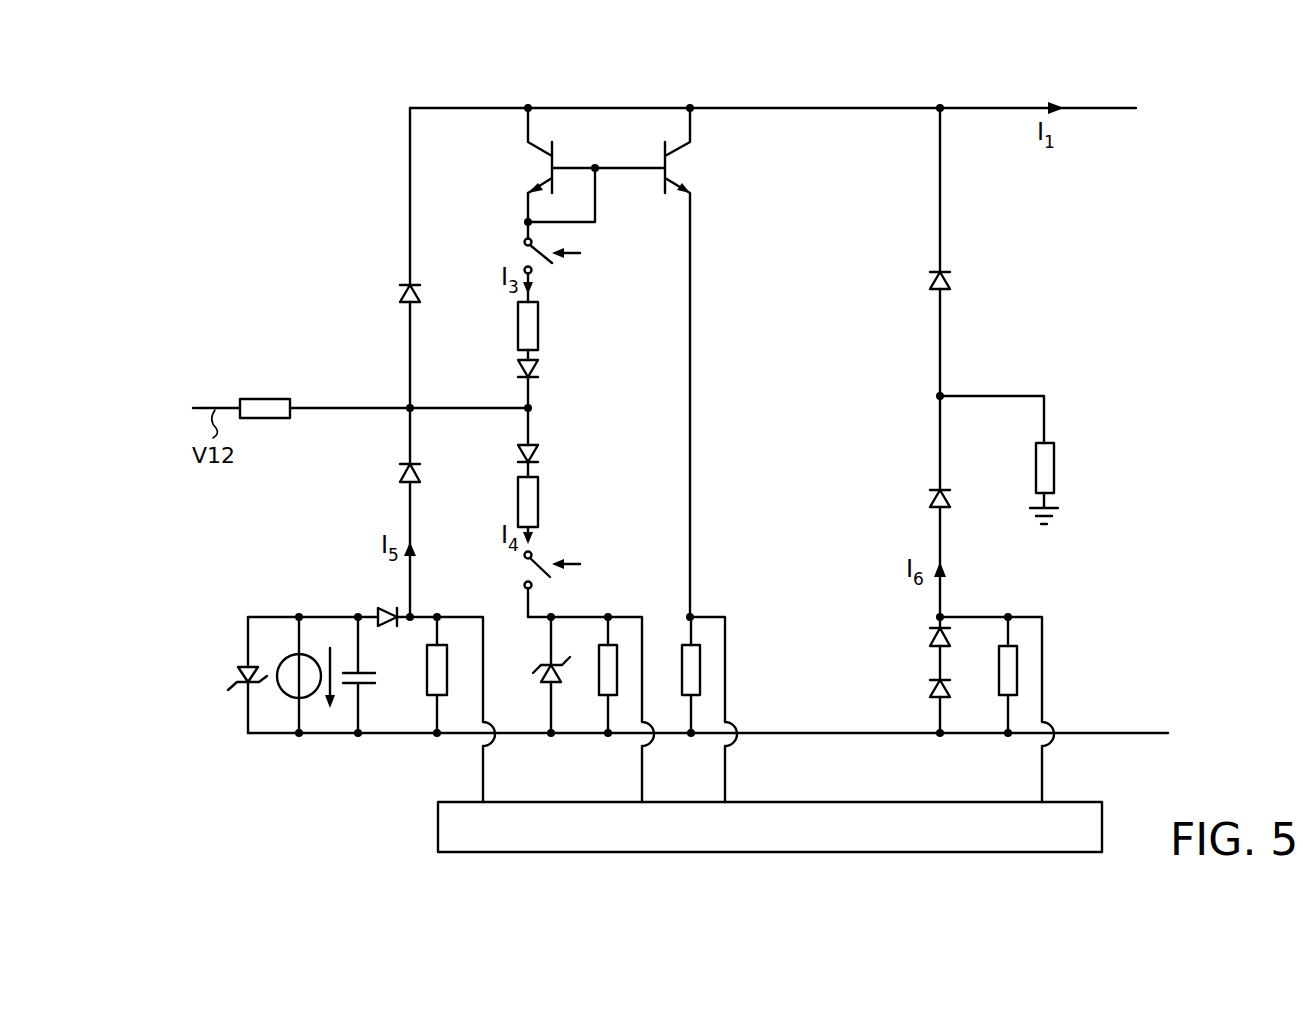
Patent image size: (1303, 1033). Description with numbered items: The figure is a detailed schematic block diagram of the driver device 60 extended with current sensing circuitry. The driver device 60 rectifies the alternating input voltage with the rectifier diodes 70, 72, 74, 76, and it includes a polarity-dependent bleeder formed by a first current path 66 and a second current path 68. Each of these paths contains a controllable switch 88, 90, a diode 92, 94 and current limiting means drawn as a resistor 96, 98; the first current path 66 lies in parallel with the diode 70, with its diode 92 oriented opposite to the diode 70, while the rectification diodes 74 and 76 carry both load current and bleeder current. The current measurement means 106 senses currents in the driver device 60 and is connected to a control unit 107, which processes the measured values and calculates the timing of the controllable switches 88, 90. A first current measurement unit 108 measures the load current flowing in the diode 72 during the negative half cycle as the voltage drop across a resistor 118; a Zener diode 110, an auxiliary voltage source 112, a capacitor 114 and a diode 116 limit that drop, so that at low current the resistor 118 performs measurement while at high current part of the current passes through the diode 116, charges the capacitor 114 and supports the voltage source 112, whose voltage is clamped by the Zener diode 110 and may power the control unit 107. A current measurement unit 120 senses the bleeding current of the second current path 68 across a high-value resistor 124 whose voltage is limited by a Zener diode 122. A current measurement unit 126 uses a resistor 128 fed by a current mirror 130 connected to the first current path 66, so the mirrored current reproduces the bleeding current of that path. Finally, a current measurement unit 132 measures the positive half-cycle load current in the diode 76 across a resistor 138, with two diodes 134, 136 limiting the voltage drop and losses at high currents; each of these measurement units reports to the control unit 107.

The driver device 60 is at (355, 142).
The first current path 66 is at (528, 130).
The second current path 68 is at (528, 600).
The diode 70 is at (400, 294).
The diode 72 is at (400, 474).
The diode 74 is at (951, 279).
The diode 76 is at (955, 500).
The controllable switch 88 is at (535, 271).
The controllable switch 90 is at (534, 554).
The diode 92 is at (540, 370).
The diode 94 is at (540, 455).
The resistor 96 is at (518, 322).
The resistor 98 is at (518, 497).
The current measurement means 106 is at (312, 679).
The control unit 107 is at (438, 830).
The first current measurement unit 108 is at (294, 712).
The Zener diode 110 is at (238, 669).
The auxiliary voltage source 112 is at (291, 700).
The capacitor 114 is at (362, 685).
The diode 116 is at (385, 612).
The resistor 118 is at (428, 665).
The current measurement unit 120 is at (571, 690).
The Zener diode 122 is at (545, 683).
The resistor 124 is at (600, 660).
The current measurement unit 126 is at (722, 676).
The resistor 128 is at (682, 660).
The current mirror 130 is at (662, 92).
The current measurement unit 132 is at (1013, 686).
The diode 134 is at (930, 638).
The diode 136 is at (930, 690).
The resistor 138 is at (1017, 665).